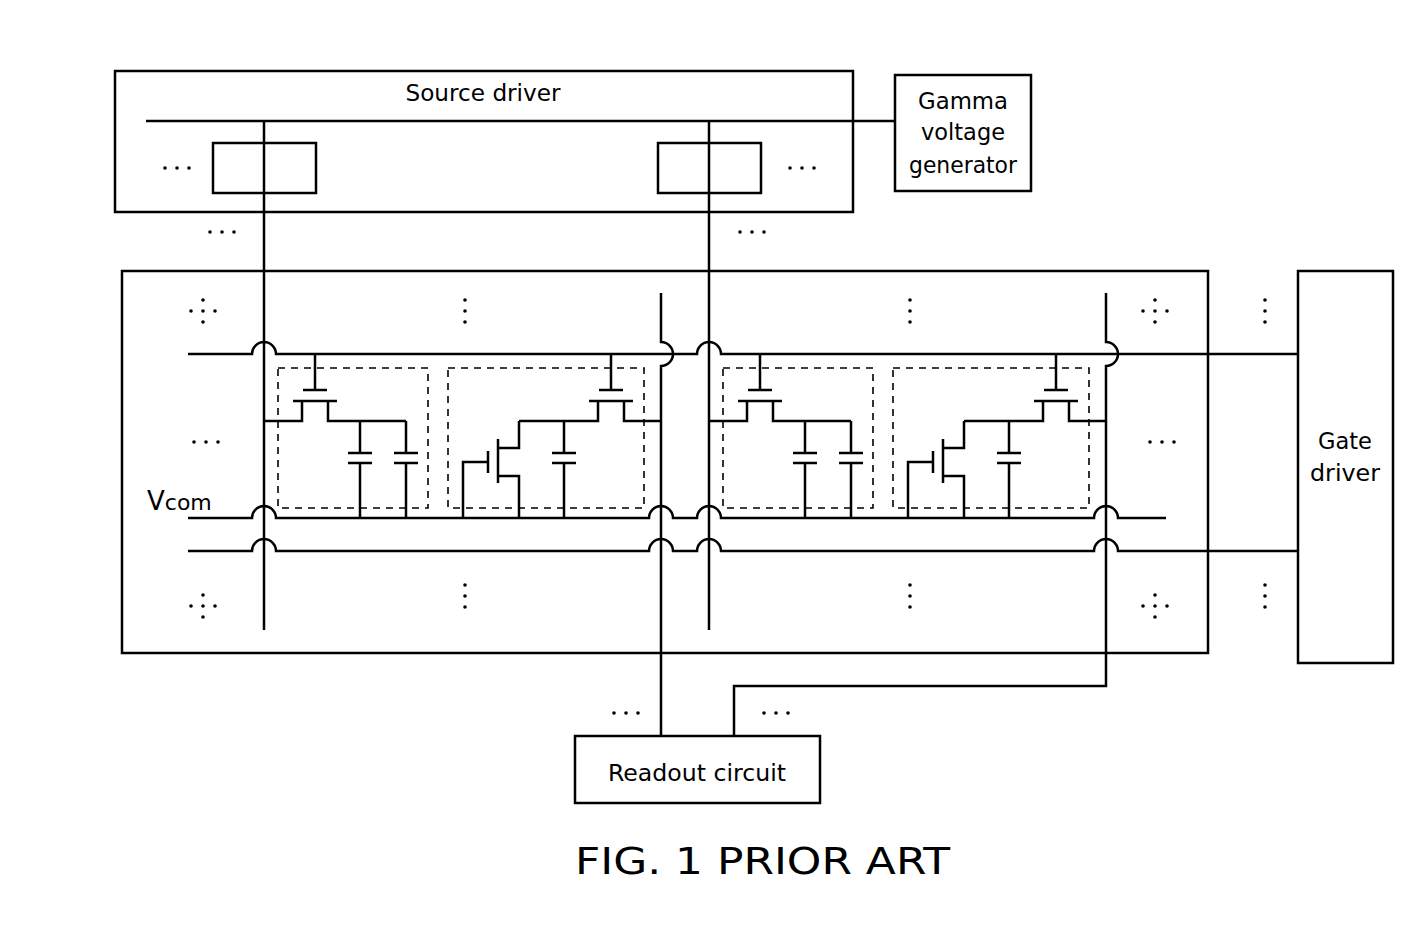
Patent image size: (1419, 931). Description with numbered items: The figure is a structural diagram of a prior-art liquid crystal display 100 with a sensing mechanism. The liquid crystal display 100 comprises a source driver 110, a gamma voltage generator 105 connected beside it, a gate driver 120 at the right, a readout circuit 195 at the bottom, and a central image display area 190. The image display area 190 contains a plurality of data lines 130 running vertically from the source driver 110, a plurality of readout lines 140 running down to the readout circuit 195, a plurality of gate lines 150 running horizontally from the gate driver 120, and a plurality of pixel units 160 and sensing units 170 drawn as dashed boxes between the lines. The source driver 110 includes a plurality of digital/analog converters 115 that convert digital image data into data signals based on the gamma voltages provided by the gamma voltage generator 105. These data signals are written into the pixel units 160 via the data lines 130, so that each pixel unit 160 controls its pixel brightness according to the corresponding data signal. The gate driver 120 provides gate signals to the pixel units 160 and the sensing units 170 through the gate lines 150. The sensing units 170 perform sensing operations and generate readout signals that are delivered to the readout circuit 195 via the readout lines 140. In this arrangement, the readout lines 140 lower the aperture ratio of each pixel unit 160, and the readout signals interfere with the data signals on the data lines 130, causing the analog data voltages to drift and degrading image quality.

The liquid crystal display 100 is at (1238, 92).
The gamma voltage generator 105 is at (955, 75).
The source driver 110 is at (745, 71).
The digital/analog converter 115 is at (729, 182).
The gate driver 120 is at (1338, 271).
The data line 130 is at (736, 300).
The readout line 140 is at (1105, 619).
The gate line 150 is at (187, 574).
The pixel unit 160 is at (805, 335).
The sensing unit 170 is at (983, 335).
The image display area 190 is at (1087, 271).
The readout circuit 195 is at (820, 772).